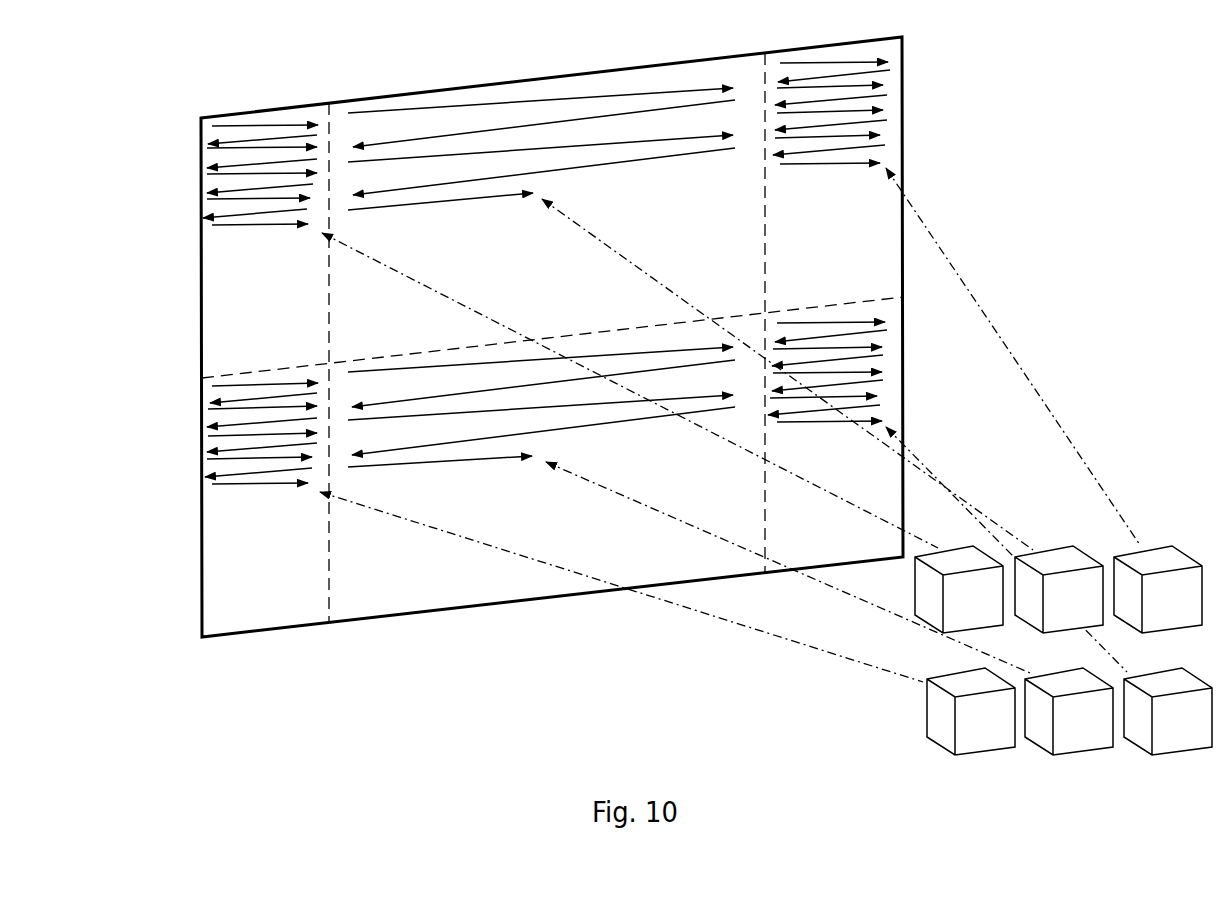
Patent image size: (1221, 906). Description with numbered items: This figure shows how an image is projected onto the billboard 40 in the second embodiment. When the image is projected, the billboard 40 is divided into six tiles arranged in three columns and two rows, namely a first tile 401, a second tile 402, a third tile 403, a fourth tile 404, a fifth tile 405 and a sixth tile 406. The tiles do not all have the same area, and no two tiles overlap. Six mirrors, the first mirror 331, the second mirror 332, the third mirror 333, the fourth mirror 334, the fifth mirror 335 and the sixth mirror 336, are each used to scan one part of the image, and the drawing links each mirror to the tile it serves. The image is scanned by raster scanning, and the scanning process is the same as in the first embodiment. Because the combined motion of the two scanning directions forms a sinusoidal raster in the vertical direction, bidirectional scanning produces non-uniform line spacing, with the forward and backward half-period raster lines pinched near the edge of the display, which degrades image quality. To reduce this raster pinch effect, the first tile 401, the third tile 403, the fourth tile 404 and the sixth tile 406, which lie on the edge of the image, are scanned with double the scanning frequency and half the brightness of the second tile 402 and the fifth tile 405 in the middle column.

The billboard 40 is at (552, 326).
The first tile 401 is at (260, 238).
The second tile 402 is at (540, 215).
The third tile 403 is at (831, 171).
The fourth tile 404 is at (261, 502).
The fifth tile 405 is at (541, 474).
The sixth tile 406 is at (827, 434).
The first mirror 331 is at (959, 589).
The second mirror 332 is at (1059, 589).
The third mirror 333 is at (1158, 589).
The fourth mirror 334 is at (971, 711).
The fifth mirror 335 is at (1069, 711).
The sixth mirror 336 is at (1168, 711).